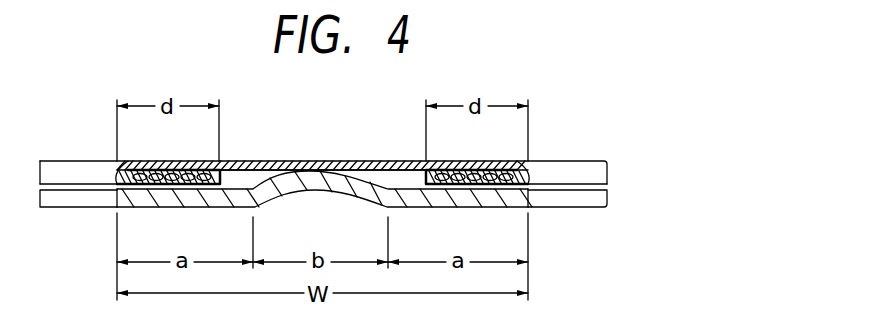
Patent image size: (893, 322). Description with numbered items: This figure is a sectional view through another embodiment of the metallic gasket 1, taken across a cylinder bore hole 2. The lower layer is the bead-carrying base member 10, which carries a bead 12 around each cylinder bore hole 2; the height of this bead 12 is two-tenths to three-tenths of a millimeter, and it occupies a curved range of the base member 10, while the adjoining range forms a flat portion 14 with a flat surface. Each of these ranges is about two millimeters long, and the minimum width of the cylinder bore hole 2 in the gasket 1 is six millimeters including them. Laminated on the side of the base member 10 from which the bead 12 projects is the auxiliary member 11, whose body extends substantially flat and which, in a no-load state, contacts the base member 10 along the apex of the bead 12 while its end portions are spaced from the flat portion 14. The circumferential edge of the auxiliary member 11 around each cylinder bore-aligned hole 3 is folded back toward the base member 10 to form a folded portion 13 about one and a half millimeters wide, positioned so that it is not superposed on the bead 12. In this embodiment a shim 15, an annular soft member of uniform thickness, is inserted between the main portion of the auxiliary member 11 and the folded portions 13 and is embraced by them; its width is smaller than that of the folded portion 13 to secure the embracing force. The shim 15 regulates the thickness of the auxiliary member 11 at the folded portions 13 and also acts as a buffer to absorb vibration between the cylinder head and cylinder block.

The metallic gasket 1 is at (349, 156).
The cylinder bore hole 2 is at (116, 192).
The cylinder bore-aligned hole 3 is at (117, 180).
The bead-carrying base member 10 is at (418, 213).
The auxiliary member 11 is at (392, 155).
The bead 12 is at (307, 188).
The folded portion 13 is at (150, 171).
The flat portion 14 is at (177, 203).
The shim 15 is at (190, 169).